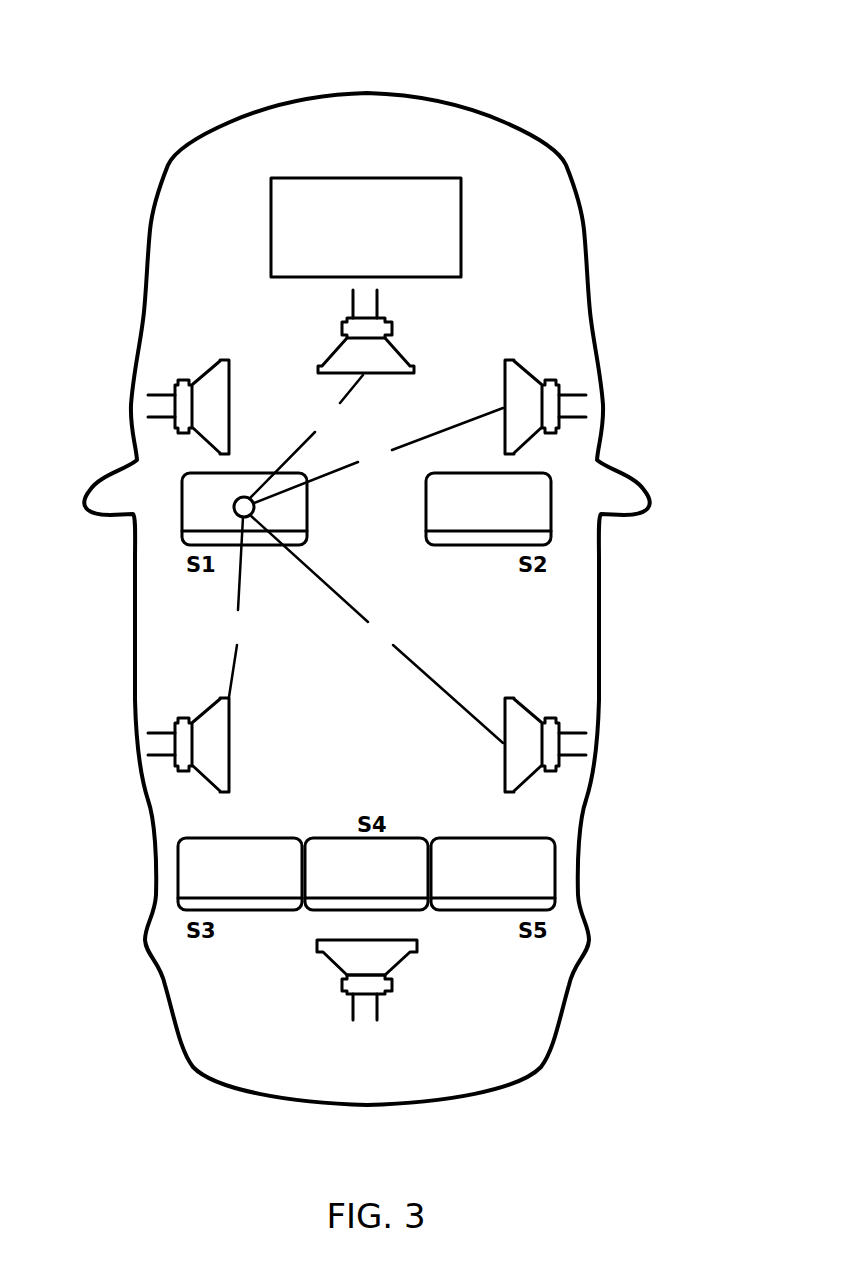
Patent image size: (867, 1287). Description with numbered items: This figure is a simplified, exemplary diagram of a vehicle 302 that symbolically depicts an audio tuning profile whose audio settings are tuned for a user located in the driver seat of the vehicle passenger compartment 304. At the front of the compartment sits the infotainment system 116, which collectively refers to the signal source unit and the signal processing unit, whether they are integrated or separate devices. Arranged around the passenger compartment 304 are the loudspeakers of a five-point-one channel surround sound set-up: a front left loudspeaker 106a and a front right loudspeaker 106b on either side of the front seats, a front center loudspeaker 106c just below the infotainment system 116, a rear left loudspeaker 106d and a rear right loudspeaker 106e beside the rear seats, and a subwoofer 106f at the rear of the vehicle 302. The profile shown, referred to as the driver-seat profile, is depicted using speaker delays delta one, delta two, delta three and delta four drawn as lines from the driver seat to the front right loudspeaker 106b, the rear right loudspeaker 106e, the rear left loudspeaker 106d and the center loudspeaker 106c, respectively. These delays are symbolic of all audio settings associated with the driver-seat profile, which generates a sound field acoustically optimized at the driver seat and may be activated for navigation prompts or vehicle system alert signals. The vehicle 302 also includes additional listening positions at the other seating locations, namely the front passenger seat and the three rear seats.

The vehicle 302 is at (475, 107).
The infotainment system 116 is at (376, 178).
The front left loudspeaker 106a is at (205, 377).
The front right loudspeaker 106b is at (530, 377).
The front center loudspeaker 106c is at (320, 352).
The rear left loudspeaker 106d is at (205, 717).
The rear right loudspeaker 106e is at (530, 717).
The subwoofer 106f is at (418, 945).
The vehicle passenger compartment 304 is at (363, 559).